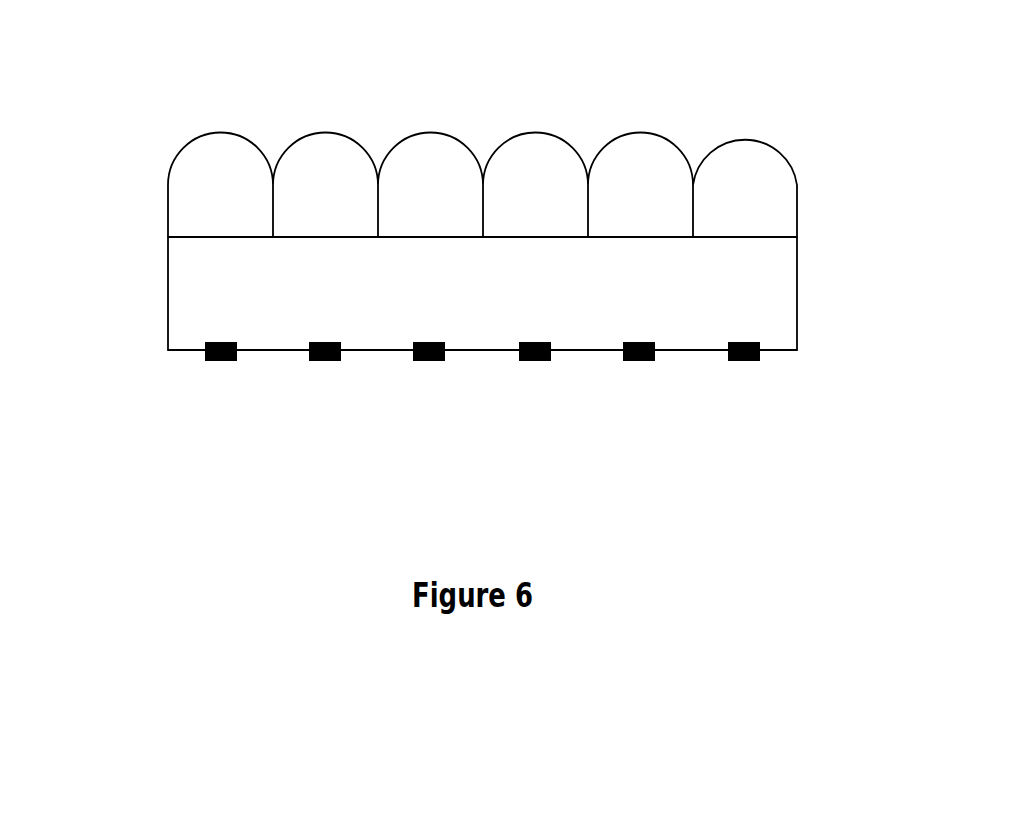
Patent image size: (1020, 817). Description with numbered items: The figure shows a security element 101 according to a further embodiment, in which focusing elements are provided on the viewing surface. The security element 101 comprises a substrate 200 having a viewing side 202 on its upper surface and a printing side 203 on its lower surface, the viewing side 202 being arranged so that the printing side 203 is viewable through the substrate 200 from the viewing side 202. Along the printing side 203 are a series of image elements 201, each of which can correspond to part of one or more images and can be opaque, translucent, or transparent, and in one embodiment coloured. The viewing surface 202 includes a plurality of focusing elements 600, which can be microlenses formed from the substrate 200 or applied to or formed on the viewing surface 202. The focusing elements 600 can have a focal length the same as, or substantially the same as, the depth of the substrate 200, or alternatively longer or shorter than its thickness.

The security element 101 is at (127, 252).
The substrate 200 is at (798, 304).
The image elements 201 is at (224, 361).
The viewing side 202 is at (803, 230).
The printing side 203 is at (680, 370).
The focusing elements 600 is at (444, 134).